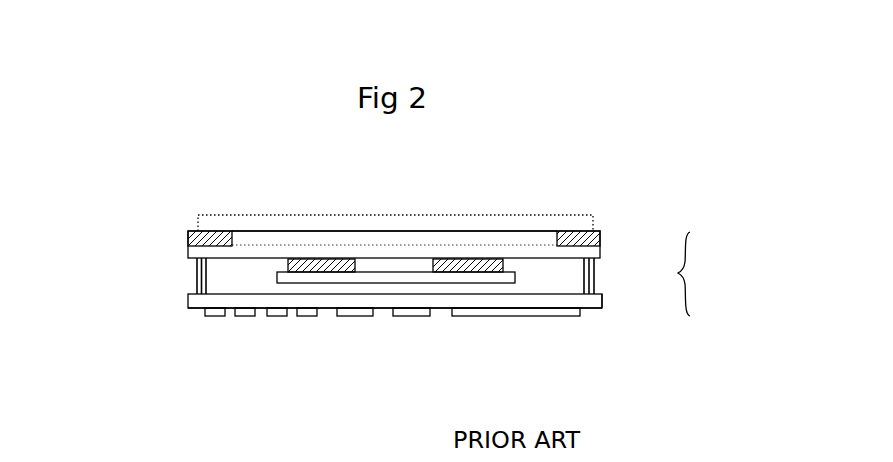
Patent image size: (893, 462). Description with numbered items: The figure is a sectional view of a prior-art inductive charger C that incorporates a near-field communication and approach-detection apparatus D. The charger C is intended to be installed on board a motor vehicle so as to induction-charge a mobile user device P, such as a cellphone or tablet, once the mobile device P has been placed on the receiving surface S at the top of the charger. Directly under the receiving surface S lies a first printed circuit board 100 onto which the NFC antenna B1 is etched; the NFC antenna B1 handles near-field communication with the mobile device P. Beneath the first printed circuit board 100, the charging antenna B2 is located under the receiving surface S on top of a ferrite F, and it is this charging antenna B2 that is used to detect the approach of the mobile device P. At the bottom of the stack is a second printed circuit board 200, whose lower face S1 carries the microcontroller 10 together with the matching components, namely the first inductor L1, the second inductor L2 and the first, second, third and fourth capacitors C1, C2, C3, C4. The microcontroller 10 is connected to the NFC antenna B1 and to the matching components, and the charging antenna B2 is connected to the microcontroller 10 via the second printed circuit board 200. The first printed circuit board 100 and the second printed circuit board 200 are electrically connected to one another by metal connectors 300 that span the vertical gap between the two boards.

The first printed circuit board 100 is at (193, 252).
The second printed circuit board 200 is at (188, 298).
The metal connectors 300 is at (200, 278).
The microcontroller 10 is at (580, 309).
The NFC antenna B1 is at (203, 240).
The charging antenna B2 is at (447, 263).
The mobile user device P is at (501, 207).
The receiving surface S is at (537, 222).
The lower face S1 is at (602, 296).
The ferrite F is at (488, 284).
The inductive charger C is at (690, 161).
The near-field communication and approach-detection apparatus D is at (694, 274).
The first capacitor C1 is at (215, 316).
The second capacitor C2 is at (245, 316).
The third capacitor C3 is at (277, 316).
The fourth capacitor C4 is at (307, 316).
The first inductor L1 is at (355, 316).
The second inductor L2 is at (410, 316).